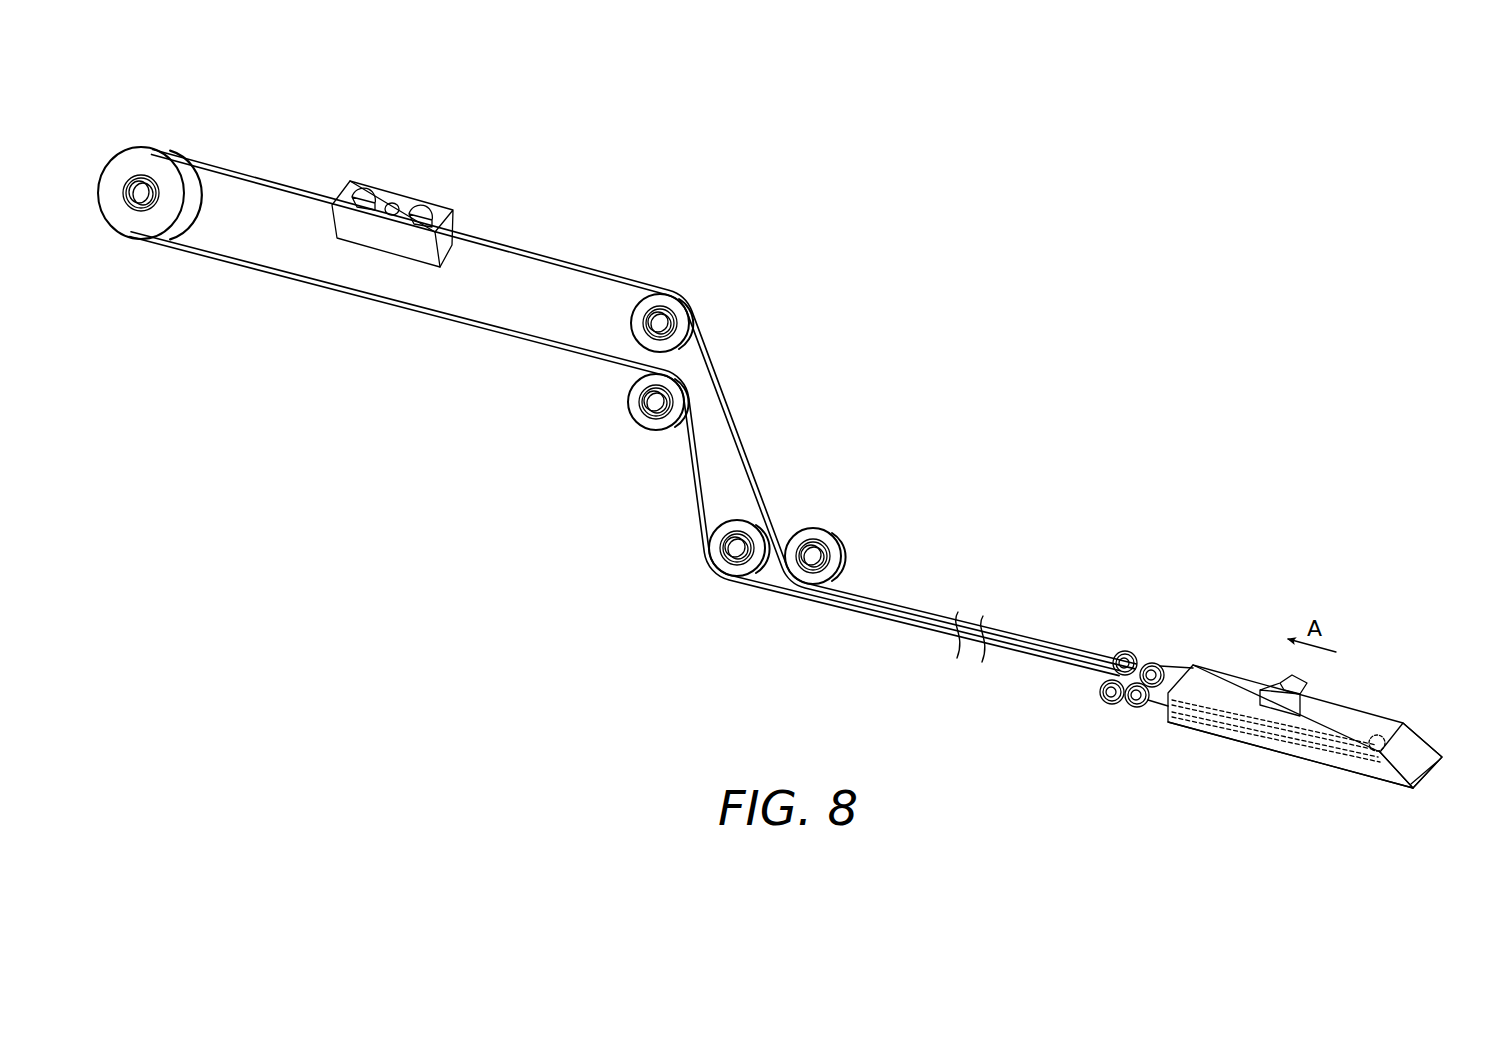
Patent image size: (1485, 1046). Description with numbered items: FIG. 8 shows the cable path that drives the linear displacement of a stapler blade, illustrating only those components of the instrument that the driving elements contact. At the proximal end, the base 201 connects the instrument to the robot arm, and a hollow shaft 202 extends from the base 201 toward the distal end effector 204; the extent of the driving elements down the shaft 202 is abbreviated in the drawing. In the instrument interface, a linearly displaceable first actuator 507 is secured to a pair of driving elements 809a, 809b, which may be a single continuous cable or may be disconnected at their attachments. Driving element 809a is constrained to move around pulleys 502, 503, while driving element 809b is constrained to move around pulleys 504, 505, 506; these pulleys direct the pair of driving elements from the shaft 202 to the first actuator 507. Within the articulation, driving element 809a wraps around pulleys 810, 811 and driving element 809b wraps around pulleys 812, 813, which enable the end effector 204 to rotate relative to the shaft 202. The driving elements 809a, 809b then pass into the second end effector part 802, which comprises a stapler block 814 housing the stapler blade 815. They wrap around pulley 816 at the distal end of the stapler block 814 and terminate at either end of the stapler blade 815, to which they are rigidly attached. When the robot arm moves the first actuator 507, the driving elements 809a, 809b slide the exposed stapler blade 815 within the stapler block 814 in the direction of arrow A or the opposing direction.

The base 201 is at (522, 150).
The shaft 202 is at (1032, 522).
The end effector 204 is at (1367, 641).
The pulley 502 is at (812, 530).
The pulley 503 is at (670, 301).
The pulley 504 is at (722, 571).
The pulley 505 is at (638, 421).
The pulley 506 is at (133, 231).
The first actuator 507 is at (410, 201).
The second end effector part 802 is at (1392, 707).
The driving element 809a is at (549, 259).
The driving element 809b is at (478, 336).
The pulley 810 is at (1116, 656).
The pulley 811 is at (1152, 663).
The pulley 812 is at (1105, 704).
The pulley 813 is at (1138, 708).
The stapler block 814 is at (1414, 741).
The stapler blade 815 is at (1303, 689).
The pulley 816 is at (1376, 790).